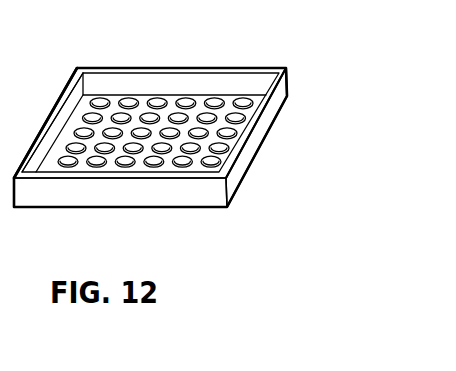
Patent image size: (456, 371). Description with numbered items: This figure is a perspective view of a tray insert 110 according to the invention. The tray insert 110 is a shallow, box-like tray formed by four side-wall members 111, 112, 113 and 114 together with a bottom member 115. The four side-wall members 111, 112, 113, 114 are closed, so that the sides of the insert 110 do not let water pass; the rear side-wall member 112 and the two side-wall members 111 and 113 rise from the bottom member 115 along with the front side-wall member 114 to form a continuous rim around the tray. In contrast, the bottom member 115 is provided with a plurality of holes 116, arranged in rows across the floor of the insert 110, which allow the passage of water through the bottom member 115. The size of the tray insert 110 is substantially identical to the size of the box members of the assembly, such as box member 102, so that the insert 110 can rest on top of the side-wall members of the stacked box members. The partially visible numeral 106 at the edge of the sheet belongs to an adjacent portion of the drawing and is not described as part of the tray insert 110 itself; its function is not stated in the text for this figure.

The box member 102 is at (8, 50).
The adjacent figure element (partial) 106 is at (17, 6).
The tray insert 110 is at (243, 180).
The side-wall member 111 is at (266, 108).
The side-wall member 112 is at (228, 82).
The side-wall member 113 is at (52, 110).
The side-wall member 114 is at (131, 190).
The bottom member 115 is at (115, 106).
The holes 116 is at (70, 165).